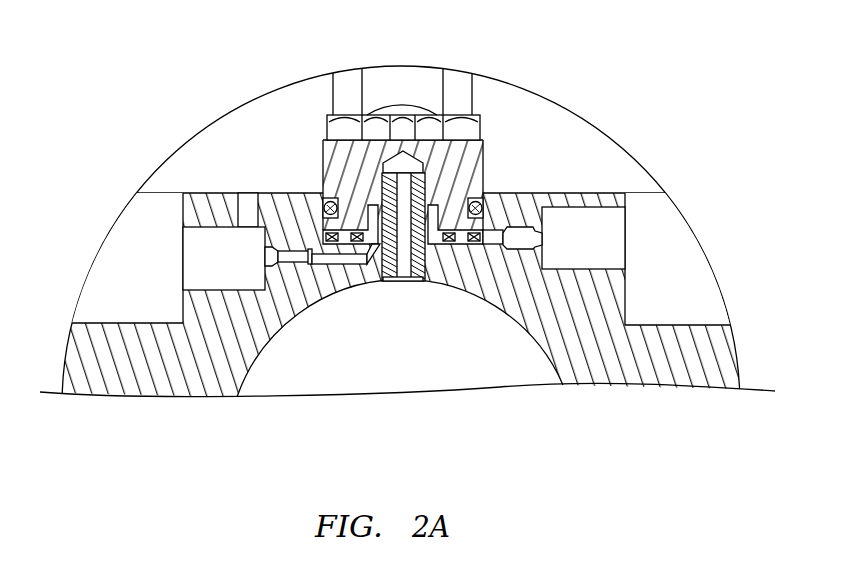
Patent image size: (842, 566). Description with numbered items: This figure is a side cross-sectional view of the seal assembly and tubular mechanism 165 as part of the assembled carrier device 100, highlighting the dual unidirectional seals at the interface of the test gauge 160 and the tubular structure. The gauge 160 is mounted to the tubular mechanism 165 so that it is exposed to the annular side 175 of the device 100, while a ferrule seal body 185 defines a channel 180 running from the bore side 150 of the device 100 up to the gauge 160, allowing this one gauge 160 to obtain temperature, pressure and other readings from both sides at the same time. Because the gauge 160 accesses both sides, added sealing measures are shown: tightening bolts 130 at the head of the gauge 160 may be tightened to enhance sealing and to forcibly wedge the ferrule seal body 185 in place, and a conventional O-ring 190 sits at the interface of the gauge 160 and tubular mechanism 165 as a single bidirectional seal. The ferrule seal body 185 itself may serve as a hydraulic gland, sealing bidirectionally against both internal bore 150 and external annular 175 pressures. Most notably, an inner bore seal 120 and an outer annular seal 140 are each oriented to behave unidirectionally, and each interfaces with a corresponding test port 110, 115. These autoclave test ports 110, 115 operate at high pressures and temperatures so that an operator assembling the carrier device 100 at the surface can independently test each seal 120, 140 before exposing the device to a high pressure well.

The carrier device 100 is at (664, 85).
The test port 110 is at (601, 253).
The test port 115 is at (245, 268).
The inner bore seal 120 is at (369, 248).
The tightening bolts 130 is at (458, 128).
The outer annular seal 140 is at (331, 246).
The bore side 150 is at (413, 379).
The test gauge 160 is at (401, 108).
The tubular mechanism 165 is at (228, 133).
The annular side 175 is at (97, 178).
The channel 180 is at (393, 185).
The ferrule seal body 185 is at (402, 284).
The O-ring 190 is at (322, 199).